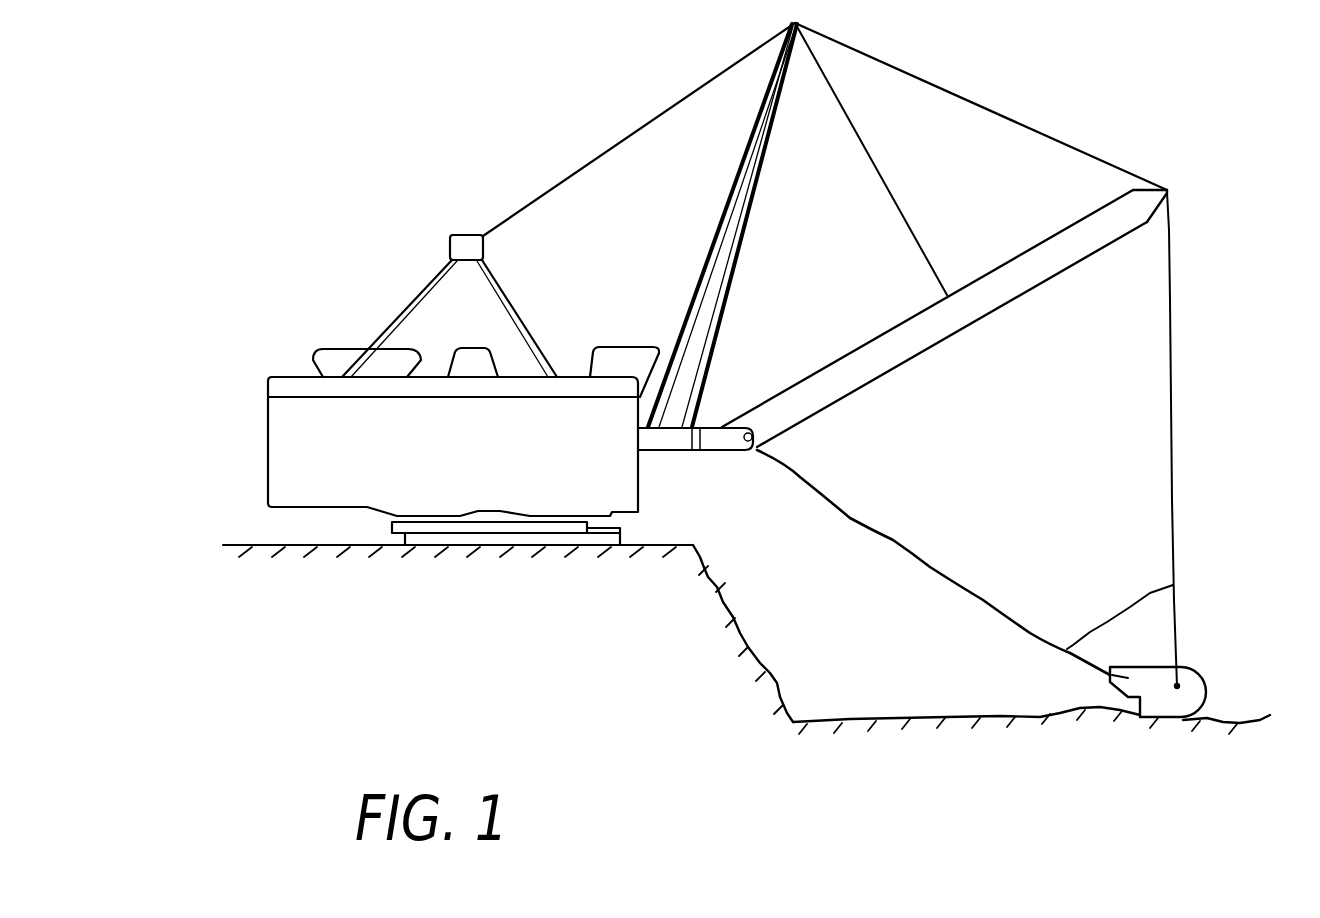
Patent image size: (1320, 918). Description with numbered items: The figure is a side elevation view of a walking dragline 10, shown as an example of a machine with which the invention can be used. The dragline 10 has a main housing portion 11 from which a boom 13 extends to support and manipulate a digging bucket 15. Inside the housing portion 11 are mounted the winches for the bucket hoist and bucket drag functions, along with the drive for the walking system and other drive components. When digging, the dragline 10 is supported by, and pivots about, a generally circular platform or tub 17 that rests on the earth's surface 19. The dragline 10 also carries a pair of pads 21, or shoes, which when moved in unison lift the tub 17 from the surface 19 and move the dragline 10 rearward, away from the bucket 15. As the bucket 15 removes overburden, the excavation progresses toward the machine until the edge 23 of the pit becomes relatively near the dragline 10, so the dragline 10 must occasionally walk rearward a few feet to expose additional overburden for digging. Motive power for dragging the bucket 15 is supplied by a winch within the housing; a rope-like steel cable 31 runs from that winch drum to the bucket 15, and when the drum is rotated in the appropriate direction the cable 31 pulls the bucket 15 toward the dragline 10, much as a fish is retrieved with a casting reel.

The walking dragline 10 is at (376, 294).
The main housing portion 11 is at (275, 447).
The boom 13 is at (972, 323).
The digging bucket 15 is at (1200, 670).
The tub 17 is at (603, 537).
The earth's surface 19 is at (268, 545).
The pads 21 is at (497, 523).
The edge of the pit 23 is at (693, 545).
The steel cable 31 is at (893, 540).